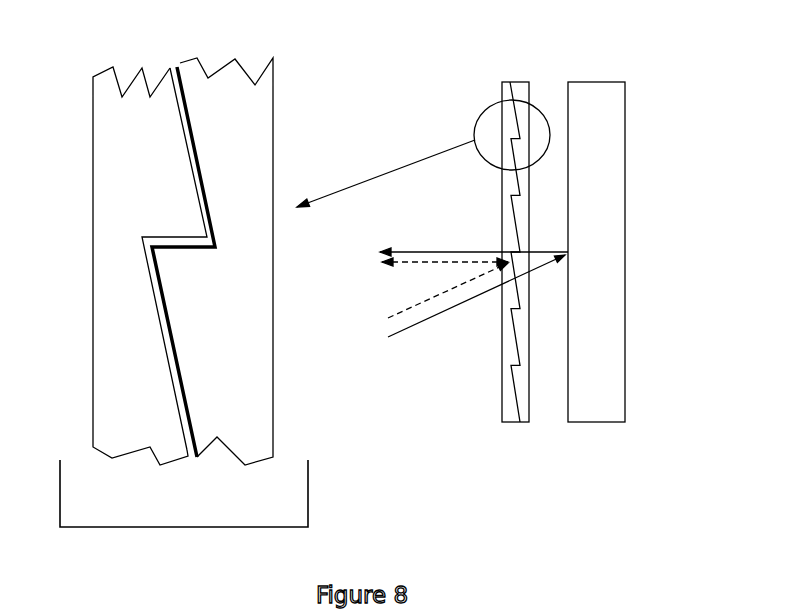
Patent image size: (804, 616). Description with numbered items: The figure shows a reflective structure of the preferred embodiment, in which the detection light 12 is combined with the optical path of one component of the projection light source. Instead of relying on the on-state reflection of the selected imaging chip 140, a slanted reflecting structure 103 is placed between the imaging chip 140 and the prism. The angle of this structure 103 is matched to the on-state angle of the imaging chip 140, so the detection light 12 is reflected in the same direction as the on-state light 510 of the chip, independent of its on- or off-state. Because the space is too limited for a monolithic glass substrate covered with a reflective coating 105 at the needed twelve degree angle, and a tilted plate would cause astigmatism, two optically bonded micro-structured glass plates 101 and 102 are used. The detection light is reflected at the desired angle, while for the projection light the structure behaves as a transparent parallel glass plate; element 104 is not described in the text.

The micro-structured glass plate 101 is at (256, 80).
The micro-structured glass plate 102 is at (157, 82).
The slanted reflecting structure 103 is at (540, 33).
The coating layer 104 is at (197, 460).
The reflective coating 105 is at (193, 458).
The imaging chip 140 is at (597, 80).
The on-state light 510 is at (455, 252).
The detection light 12 is at (405, 308).